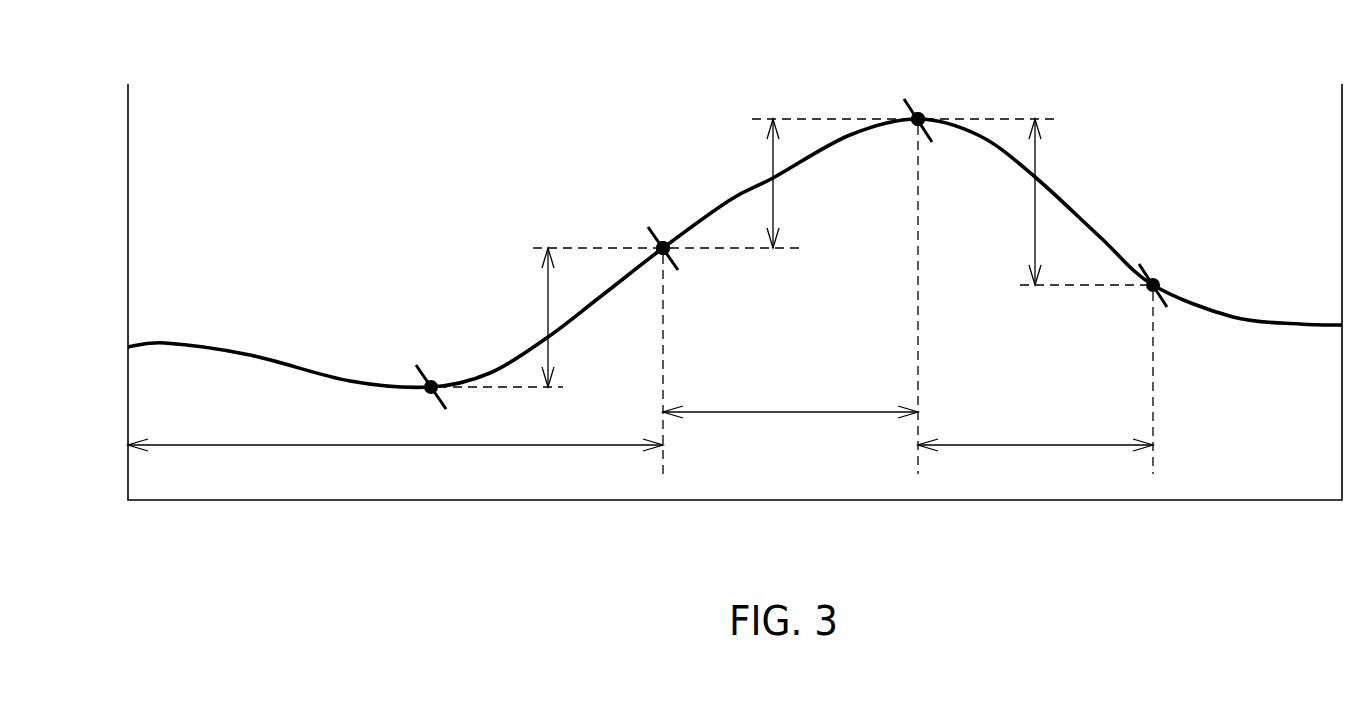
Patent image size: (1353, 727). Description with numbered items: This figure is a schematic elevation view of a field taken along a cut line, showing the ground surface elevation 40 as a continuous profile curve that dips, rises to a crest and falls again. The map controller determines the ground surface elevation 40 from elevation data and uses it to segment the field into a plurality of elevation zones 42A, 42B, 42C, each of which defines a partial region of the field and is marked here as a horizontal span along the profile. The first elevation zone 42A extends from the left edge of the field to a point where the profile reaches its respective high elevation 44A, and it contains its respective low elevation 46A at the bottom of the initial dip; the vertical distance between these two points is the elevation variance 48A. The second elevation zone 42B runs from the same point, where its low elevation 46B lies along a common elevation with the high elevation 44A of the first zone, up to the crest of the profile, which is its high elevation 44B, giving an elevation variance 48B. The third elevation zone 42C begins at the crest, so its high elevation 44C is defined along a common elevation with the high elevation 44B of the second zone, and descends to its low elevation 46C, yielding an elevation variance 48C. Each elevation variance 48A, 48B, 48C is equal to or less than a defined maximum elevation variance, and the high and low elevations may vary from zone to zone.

The ground surface elevation 40 is at (250, 355).
The first elevation zone 42A is at (310, 445).
The second elevation zone 42B is at (730, 412).
The third elevation zone 42C is at (973, 445).
The high elevation 44A is at (660, 243).
The high elevation 44B is at (910, 115).
The high elevation 44C is at (922, 124).
The low elevation 46A is at (423, 393).
The low elevation 46B is at (668, 252).
The low elevation 46C is at (1147, 288).
The elevation variance 48A is at (545, 308).
The elevation variance 48B is at (775, 210).
The elevation variance 48C is at (1037, 155).